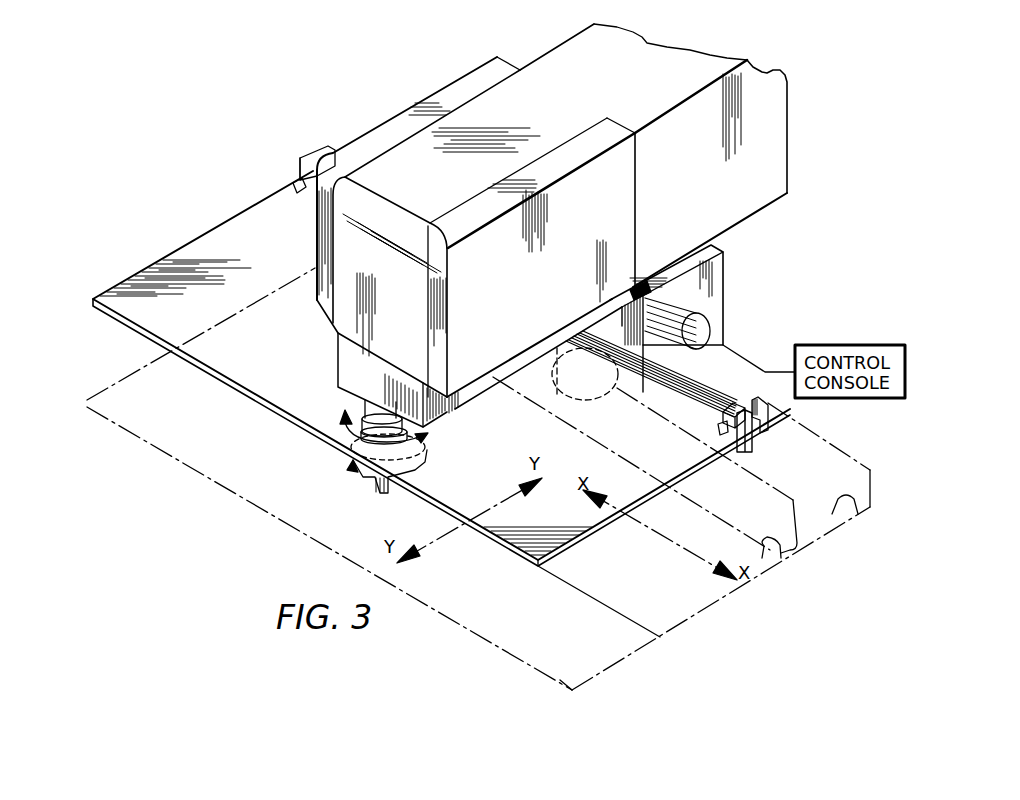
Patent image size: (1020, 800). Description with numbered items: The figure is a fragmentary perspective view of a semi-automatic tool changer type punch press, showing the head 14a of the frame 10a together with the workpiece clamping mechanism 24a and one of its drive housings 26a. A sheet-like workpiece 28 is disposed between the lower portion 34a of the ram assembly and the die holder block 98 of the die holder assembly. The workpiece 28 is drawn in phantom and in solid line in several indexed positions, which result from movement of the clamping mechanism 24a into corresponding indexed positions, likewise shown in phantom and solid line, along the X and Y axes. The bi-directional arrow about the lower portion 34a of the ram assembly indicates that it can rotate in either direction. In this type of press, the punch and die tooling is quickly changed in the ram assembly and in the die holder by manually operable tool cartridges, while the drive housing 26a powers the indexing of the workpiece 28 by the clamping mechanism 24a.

The frame 10a is at (741, 226).
The head 14a is at (560, 84).
The workpiece clamping mechanism 24a is at (763, 432).
The drive housing 26a is at (723, 297).
The sheet-like workpiece 28 is at (158, 284).
The lower portion of the ram assembly 34a is at (366, 403).
The die holder block 98 is at (350, 448).